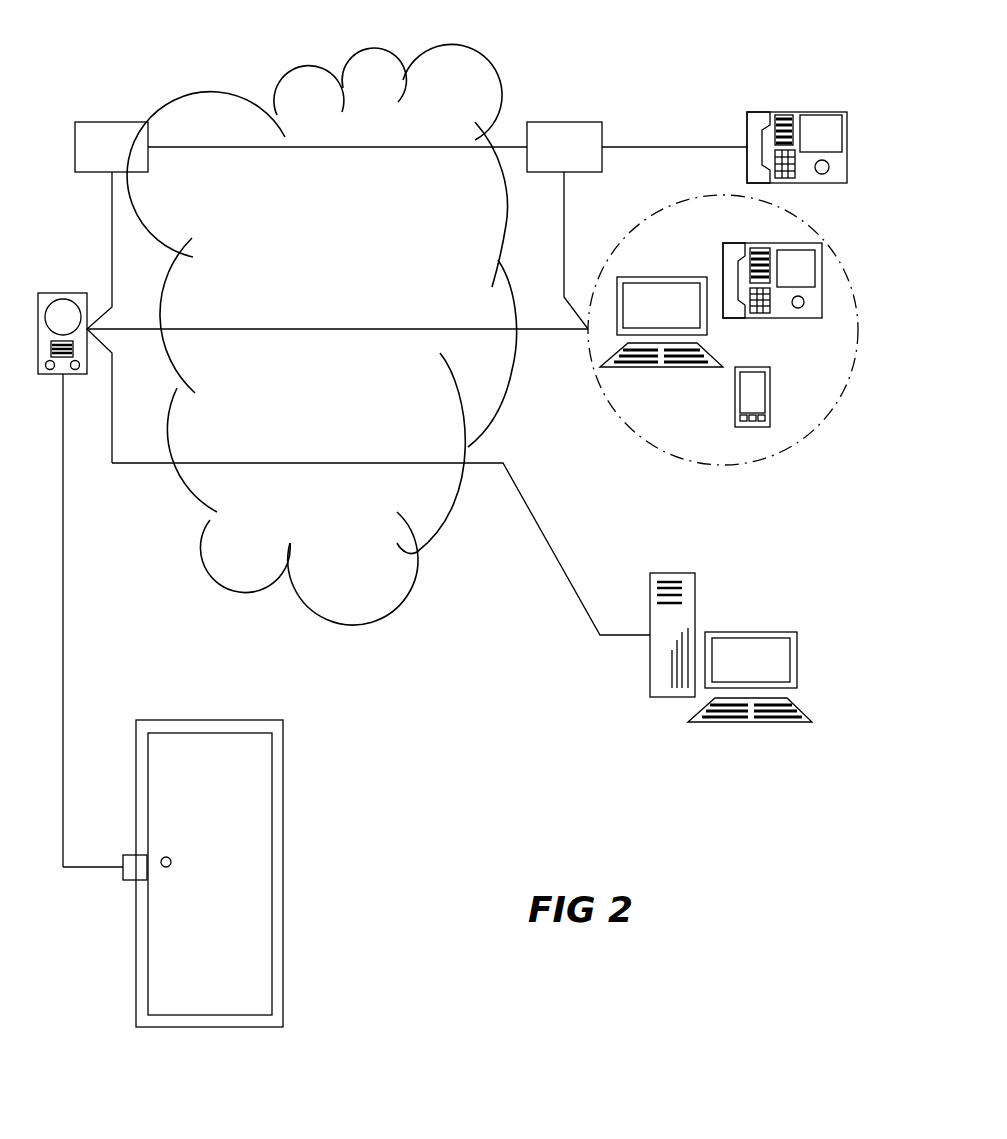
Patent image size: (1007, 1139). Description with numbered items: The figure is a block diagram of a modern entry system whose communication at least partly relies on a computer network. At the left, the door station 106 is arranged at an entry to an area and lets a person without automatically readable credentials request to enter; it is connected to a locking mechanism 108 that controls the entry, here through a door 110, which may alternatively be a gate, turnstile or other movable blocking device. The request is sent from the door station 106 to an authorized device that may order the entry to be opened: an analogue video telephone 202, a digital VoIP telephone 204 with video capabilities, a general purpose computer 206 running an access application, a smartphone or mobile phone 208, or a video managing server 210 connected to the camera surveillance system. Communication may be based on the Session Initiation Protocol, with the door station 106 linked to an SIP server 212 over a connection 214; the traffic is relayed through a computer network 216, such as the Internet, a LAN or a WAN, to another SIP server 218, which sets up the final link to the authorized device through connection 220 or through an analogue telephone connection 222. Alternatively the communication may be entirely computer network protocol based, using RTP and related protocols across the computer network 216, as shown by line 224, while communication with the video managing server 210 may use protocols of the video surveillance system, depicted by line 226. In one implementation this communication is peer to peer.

The door station 106 is at (73, 292).
The locking mechanism 108 is at (125, 855).
The door 110 is at (150, 920).
The analogue video telephone 202 is at (760, 118).
The digital VoIP telephone 204 is at (720, 241).
The general purpose computer 206 is at (636, 288).
The smartphone 208 is at (773, 415).
The video managing server 210 is at (680, 717).
The SIP server 212 is at (136, 130).
The connection 214 is at (108, 227).
The computer network 216 is at (338, 260).
The SIP server 218 is at (552, 131).
The connection 220 is at (563, 266).
The analogue telephone connection 222 is at (695, 147).
The line 224 is at (310, 330).
The line 226 is at (297, 463).